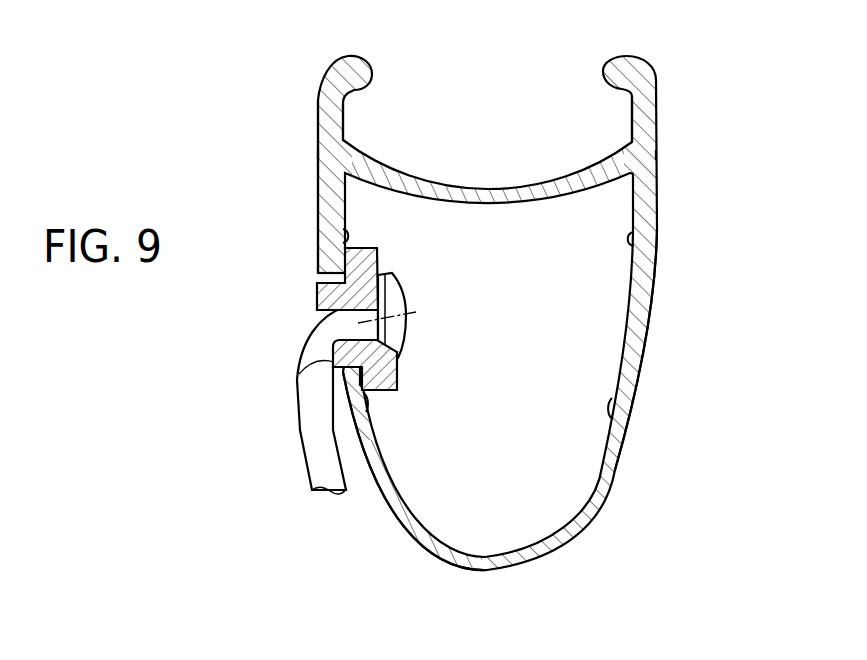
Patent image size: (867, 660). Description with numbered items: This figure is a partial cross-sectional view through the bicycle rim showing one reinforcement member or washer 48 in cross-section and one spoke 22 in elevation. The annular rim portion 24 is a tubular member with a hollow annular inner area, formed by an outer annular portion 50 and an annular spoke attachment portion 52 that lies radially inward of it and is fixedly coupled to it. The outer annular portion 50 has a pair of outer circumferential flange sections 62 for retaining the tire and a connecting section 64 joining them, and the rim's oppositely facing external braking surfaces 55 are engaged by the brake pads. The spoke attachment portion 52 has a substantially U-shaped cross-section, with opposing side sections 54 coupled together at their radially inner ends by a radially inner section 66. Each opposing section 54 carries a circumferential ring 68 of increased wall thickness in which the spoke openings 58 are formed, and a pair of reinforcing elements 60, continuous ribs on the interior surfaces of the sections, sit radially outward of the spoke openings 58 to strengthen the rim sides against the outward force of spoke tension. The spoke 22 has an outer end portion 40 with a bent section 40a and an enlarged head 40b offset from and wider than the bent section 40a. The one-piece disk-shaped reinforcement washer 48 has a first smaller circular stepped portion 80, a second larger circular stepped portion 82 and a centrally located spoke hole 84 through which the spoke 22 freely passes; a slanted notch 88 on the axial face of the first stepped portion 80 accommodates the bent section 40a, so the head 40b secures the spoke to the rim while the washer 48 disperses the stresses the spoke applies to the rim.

The annular rim portion 24 is at (674, 61).
The outer annular portion 50 is at (308, 103).
The external braking surfaces 55 is at (318, 153).
The outer circumferential flange sections 62 is at (351, 89).
The connecting section 64 is at (485, 196).
The reinforcing elements 60 is at (352, 236).
The spoke openings 58 is at (316, 287).
The reinforcement member 48 is at (359, 272).
The first circular stepped portion 80 is at (318, 295).
The enlarged head 40b is at (400, 283).
The spoke hole 84 is at (411, 325).
The second circular stepped portion 82 is at (398, 386).
The outer end portion 40 is at (279, 400).
The bent section 40a is at (300, 362).
The slanted notch 88 is at (331, 421).
The circumferential ring 68 is at (358, 402).
The opposing side sections 54 is at (643, 345).
The annular spoke attachment portion 52 is at (366, 500).
The radially inner section 66 is at (500, 571).
The spoke 22 is at (300, 468).